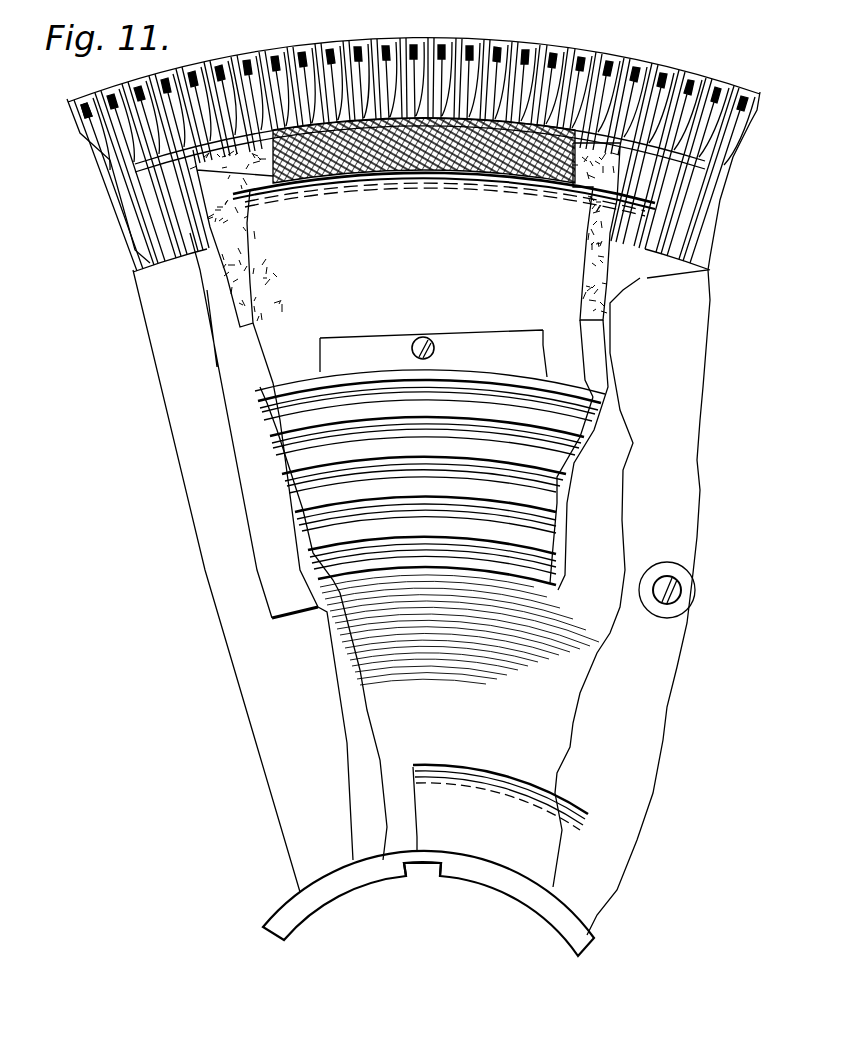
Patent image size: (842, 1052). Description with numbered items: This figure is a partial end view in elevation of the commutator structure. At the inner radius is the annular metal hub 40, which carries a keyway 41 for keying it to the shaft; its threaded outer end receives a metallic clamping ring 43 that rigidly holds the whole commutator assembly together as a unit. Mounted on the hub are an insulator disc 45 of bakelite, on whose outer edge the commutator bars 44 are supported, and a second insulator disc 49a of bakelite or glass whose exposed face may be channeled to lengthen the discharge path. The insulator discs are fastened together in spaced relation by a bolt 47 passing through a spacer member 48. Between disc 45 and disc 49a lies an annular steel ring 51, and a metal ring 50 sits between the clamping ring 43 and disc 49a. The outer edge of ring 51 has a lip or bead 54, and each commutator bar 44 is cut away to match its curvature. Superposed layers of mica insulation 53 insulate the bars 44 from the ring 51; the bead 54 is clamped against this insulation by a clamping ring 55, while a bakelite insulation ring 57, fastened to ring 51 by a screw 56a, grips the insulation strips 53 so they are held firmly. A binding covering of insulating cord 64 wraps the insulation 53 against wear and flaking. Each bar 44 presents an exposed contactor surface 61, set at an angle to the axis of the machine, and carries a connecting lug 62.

The contactor surface 61 is at (707, 72).
The connecting lug 62 is at (90, 113).
The commutator bar 44 is at (88, 137).
The binding covering 64 is at (190, 170).
The bead 54 is at (660, 190).
The insulation 53 is at (617, 198).
The metallic ring 51 is at (633, 290).
The insulation ring 57 is at (567, 350).
The clamping ring 55 is at (317, 357).
The insulator disc 45 is at (683, 425).
The insulator disc 49a is at (560, 540).
The bolt 47 is at (677, 590).
The spacer member 48 is at (702, 593).
The metal ring 50 is at (570, 707).
The clamping ring 43 is at (557, 853).
The keyway 41 is at (417, 873).
The hub 40 is at (550, 927).
The screw 56a is at (428, 338).